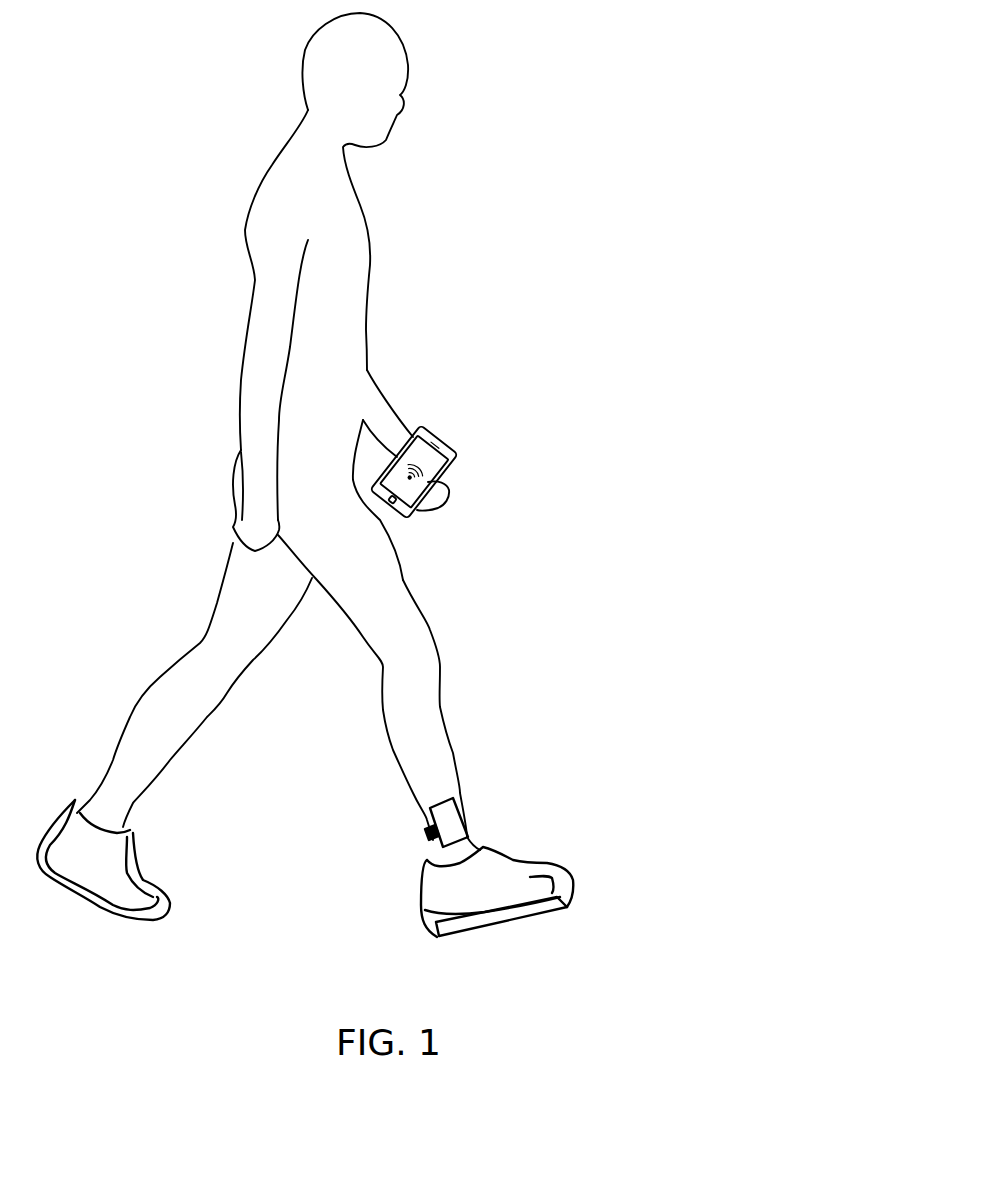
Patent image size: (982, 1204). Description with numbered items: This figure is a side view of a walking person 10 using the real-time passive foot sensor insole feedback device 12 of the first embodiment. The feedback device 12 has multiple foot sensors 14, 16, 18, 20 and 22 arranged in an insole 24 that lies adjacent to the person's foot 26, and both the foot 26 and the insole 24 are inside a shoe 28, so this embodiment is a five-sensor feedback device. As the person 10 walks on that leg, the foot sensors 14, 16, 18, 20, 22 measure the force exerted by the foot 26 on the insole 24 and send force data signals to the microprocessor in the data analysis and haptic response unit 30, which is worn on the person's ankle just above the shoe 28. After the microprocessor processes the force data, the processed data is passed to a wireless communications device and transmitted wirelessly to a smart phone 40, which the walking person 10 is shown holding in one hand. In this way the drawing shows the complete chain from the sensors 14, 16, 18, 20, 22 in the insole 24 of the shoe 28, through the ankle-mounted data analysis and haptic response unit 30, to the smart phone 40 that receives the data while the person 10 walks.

The walking person 10 is at (508, 115).
The passive foot sensor insole feedback device 12 is at (443, 823).
The foot sensor 14 is at (643, 892).
The foot sensor 16 is at (643, 892).
The foot sensor 18 is at (643, 892).
The foot sensor 20 is at (643, 892).
The foot sensor 22 is at (563, 895).
The insole 24 is at (643, 917).
The foot 26 is at (500, 883).
The shoe 28 is at (559, 888).
The data analysis and haptic response unit 30 is at (462, 805).
The smart phone 40 is at (463, 440).